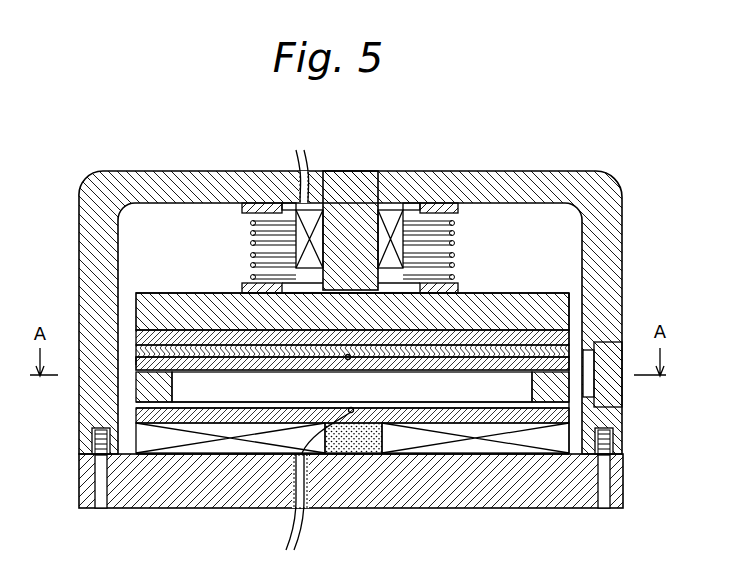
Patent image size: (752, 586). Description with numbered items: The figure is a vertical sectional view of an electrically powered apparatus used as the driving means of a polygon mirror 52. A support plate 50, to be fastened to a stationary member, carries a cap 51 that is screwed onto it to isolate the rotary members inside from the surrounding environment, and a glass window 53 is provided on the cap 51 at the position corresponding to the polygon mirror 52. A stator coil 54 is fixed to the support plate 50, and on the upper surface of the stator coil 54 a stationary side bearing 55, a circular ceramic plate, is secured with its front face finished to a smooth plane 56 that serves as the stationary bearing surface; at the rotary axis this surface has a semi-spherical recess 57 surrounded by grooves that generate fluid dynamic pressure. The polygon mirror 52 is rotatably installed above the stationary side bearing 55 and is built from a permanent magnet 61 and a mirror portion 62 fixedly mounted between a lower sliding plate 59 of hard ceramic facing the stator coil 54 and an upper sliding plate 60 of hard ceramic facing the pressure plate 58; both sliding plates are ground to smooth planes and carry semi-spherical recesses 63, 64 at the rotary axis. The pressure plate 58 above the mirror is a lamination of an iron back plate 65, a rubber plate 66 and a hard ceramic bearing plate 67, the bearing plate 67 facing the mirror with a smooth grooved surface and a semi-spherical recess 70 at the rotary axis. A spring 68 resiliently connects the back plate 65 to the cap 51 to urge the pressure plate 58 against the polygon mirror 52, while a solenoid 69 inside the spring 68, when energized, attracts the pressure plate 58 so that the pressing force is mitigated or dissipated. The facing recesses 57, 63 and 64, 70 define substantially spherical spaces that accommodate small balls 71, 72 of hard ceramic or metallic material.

The support plate 50 is at (624, 483).
The cap 51 is at (622, 188).
The polygon mirror 52 is at (573, 396).
The glass window 53 is at (603, 343).
The stator coil 54 is at (525, 452).
The stationary side bearing 55 is at (488, 440).
The smooth plane 56 is at (413, 425).
The semi-spherical recess 57 is at (355, 455).
The pressure plate 58 is at (575, 295).
The lower sliding plate 59 is at (553, 428).
The upper sliding plate 60 is at (137, 358).
The permanent magnet 61 is at (352, 387).
The mirror portion 62 is at (137, 398).
The semi-spherical recess 63 is at (300, 447).
The semi-spherical recess 64 is at (350, 360).
The back plate 65 is at (533, 293).
The rubber plate 66 is at (487, 335).
The bearing plate 67 is at (171, 310).
The spring 68 is at (452, 228).
The solenoid 69 is at (380, 236).
The semi-spherical recess 70 is at (360, 345).
The small ball 71 is at (323, 507).
The small ball 72 is at (348, 355).